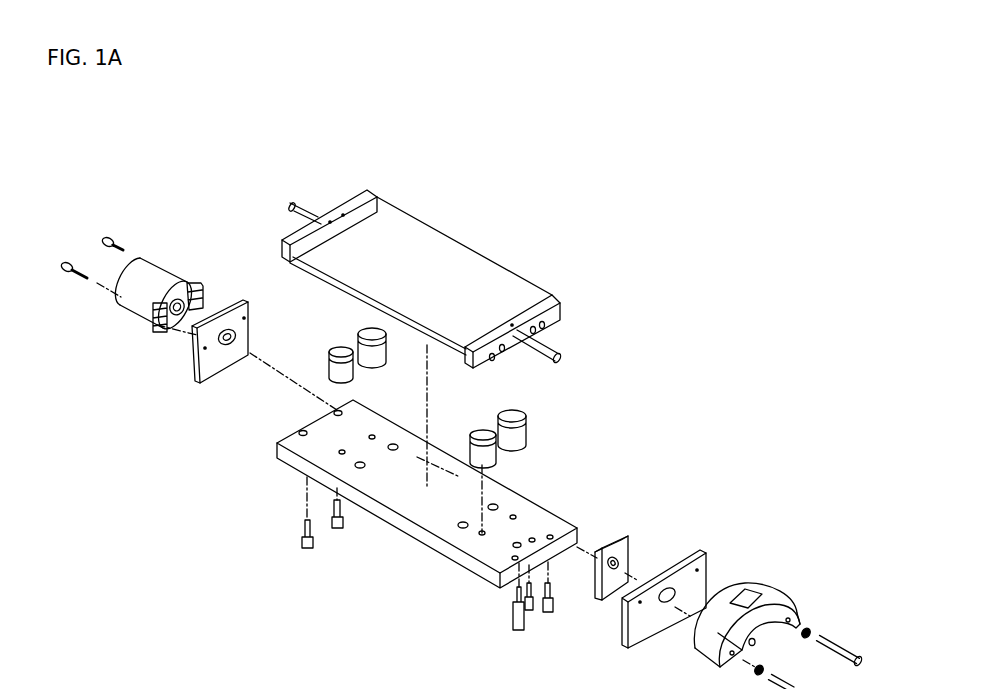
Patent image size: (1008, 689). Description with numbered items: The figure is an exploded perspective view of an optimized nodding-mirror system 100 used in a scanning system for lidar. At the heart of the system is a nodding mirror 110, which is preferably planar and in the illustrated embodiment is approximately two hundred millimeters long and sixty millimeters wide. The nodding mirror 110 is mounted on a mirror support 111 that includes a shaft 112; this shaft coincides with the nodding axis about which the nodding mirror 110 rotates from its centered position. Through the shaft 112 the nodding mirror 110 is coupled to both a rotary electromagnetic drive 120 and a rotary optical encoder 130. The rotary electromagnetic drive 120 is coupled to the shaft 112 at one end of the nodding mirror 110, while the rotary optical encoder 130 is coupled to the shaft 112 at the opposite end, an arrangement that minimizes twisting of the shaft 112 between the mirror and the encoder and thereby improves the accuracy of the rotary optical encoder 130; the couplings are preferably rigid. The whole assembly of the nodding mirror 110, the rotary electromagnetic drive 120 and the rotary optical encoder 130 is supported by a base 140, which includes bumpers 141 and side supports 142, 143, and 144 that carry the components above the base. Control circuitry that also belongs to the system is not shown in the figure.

The nodding-mirror system 100 is at (80, 170).
The nodding mirror 110 is at (443, 240).
The mirror support 111 is at (373, 192).
The shaft 112 is at (540, 333).
The rotary electromagnetic drive 120 is at (790, 600).
The rotary optical encoder 130 is at (160, 267).
The base 140 is at (463, 568).
The bumpers 141 is at (537, 430).
The side support 142 is at (197, 382).
The side support 143 is at (595, 600).
The side support 144 is at (623, 648).